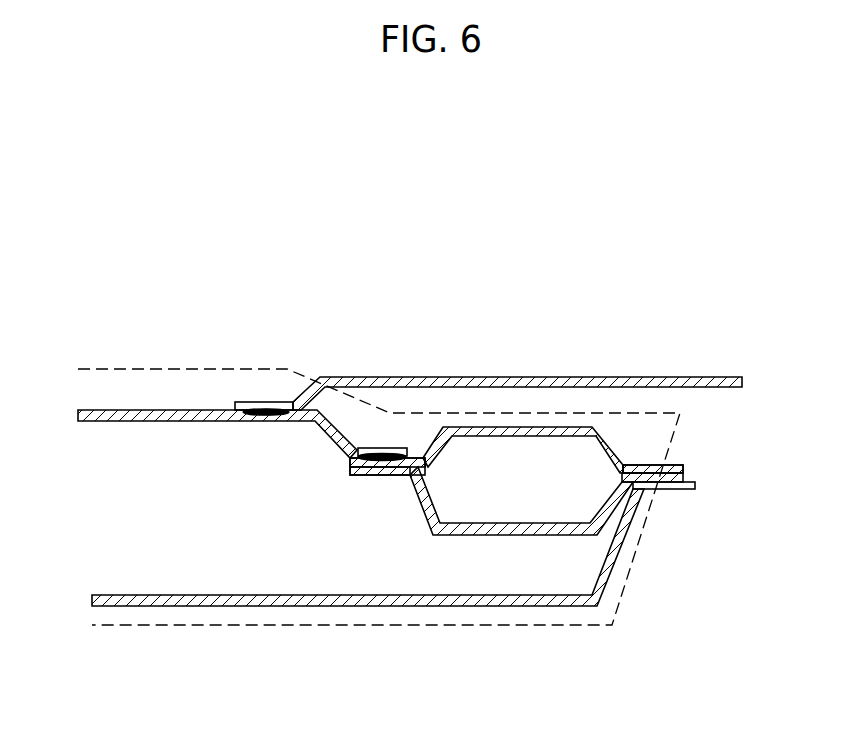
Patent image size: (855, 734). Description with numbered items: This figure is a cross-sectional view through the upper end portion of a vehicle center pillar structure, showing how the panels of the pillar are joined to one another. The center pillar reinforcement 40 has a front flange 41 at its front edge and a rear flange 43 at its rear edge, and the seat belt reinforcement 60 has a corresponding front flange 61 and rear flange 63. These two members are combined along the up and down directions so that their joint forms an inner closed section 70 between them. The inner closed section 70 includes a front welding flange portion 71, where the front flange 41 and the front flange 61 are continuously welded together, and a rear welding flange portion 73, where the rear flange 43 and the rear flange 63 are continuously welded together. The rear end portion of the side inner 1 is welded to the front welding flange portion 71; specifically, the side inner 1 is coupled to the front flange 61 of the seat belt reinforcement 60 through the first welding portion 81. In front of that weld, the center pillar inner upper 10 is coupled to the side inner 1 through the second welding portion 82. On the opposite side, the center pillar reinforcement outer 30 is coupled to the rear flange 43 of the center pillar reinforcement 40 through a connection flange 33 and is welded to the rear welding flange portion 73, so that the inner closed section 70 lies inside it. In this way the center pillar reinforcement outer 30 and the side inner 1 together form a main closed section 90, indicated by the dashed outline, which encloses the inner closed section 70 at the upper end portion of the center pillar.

The side inner 1 is at (136, 426).
The center pillar inner upper 10 is at (468, 370).
The center pillar reinforcement outer 30 is at (234, 613).
The connection flange 33 is at (688, 490).
The center pillar reinforcement 40 is at (427, 531).
The front flange 41 is at (375, 476).
The rear flange 43 is at (672, 484).
The seat belt reinforcement 60 is at (598, 426).
The front flange 61 is at (350, 462).
The rear flange 63 is at (684, 469).
The inner closed section 70 is at (525, 456).
The front welding flange portion 71 is at (340, 486).
The rear welding flange portion 73 is at (690, 460).
The first welding portion 81 is at (382, 452).
The second welding portion 82 is at (266, 407).
The main closed section 90 is at (548, 628).